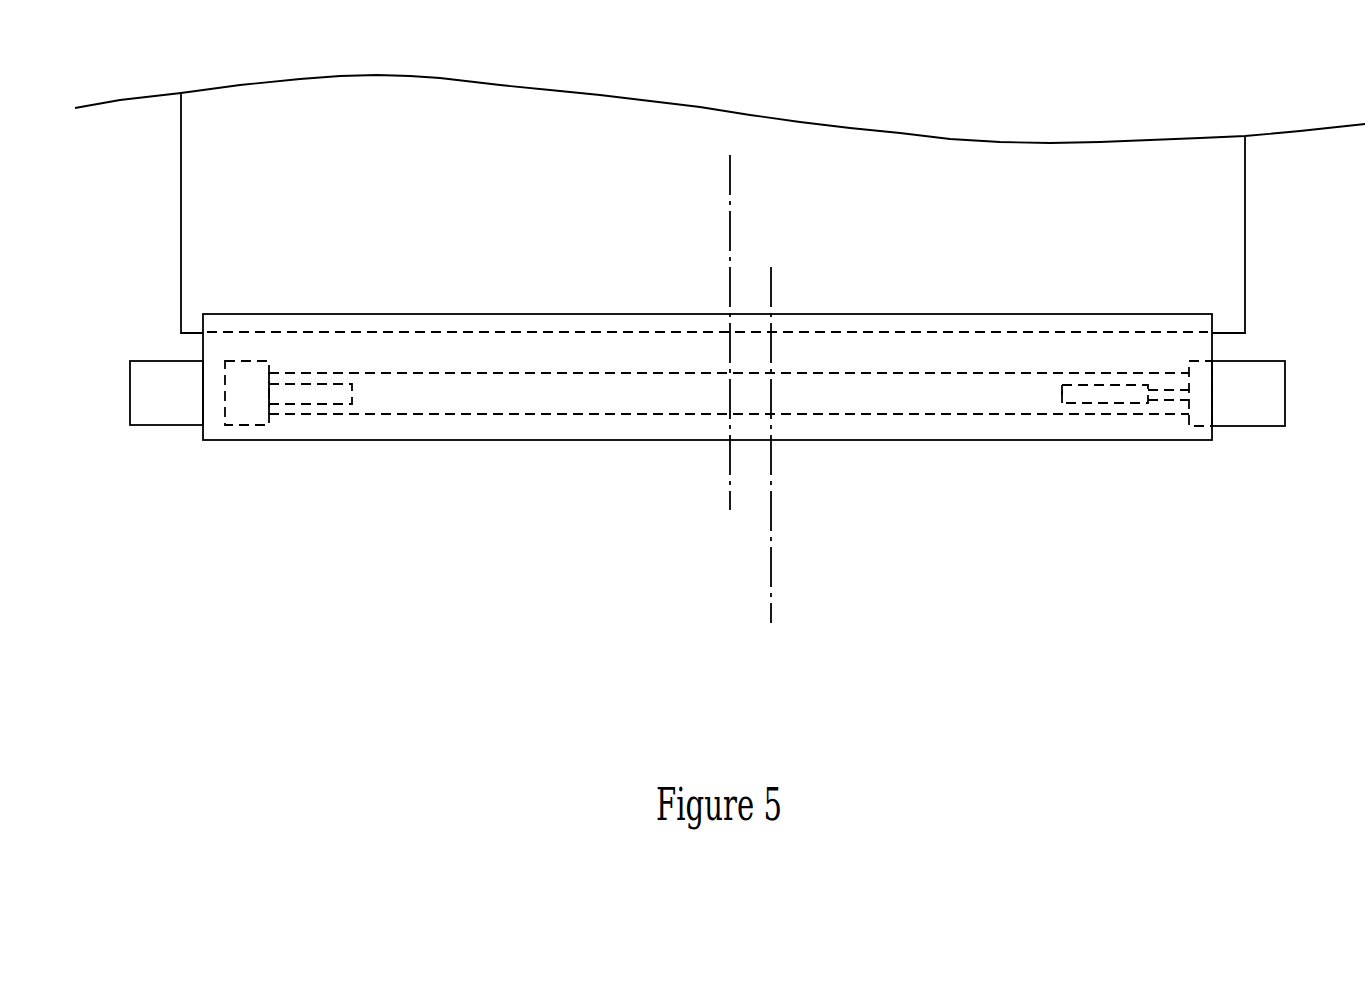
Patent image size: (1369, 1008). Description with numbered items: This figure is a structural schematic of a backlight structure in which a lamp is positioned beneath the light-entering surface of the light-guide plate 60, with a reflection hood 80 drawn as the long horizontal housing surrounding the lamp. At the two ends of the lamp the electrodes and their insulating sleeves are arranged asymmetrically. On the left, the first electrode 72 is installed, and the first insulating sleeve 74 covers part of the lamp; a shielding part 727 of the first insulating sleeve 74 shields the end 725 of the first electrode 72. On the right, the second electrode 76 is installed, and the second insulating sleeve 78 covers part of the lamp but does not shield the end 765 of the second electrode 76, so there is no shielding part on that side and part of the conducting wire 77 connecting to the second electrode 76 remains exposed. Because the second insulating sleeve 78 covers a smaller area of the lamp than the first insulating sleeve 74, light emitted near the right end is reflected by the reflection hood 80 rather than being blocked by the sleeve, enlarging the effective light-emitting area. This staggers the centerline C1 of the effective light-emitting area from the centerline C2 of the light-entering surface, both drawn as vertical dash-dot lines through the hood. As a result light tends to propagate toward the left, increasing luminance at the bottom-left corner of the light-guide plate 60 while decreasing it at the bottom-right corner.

The light-guide plate 60 is at (1210, 243).
The reflection hood 80 is at (790, 440).
The first insulating sleeve 74 is at (175, 402).
The shielding part 727 is at (247, 413).
The end of the first electrode 725 is at (270, 394).
The first electrode 72 is at (343, 395).
The second electrode 76 is at (1075, 392).
The end of the second electrode 765 is at (1147, 397).
The conducting wire 77 is at (1170, 397).
The second insulating sleeve 78 is at (1242, 407).
The centerline of the effective light-emitting area C1 is at (731, 213).
The centerline of the light-entering surface C2 is at (772, 280).